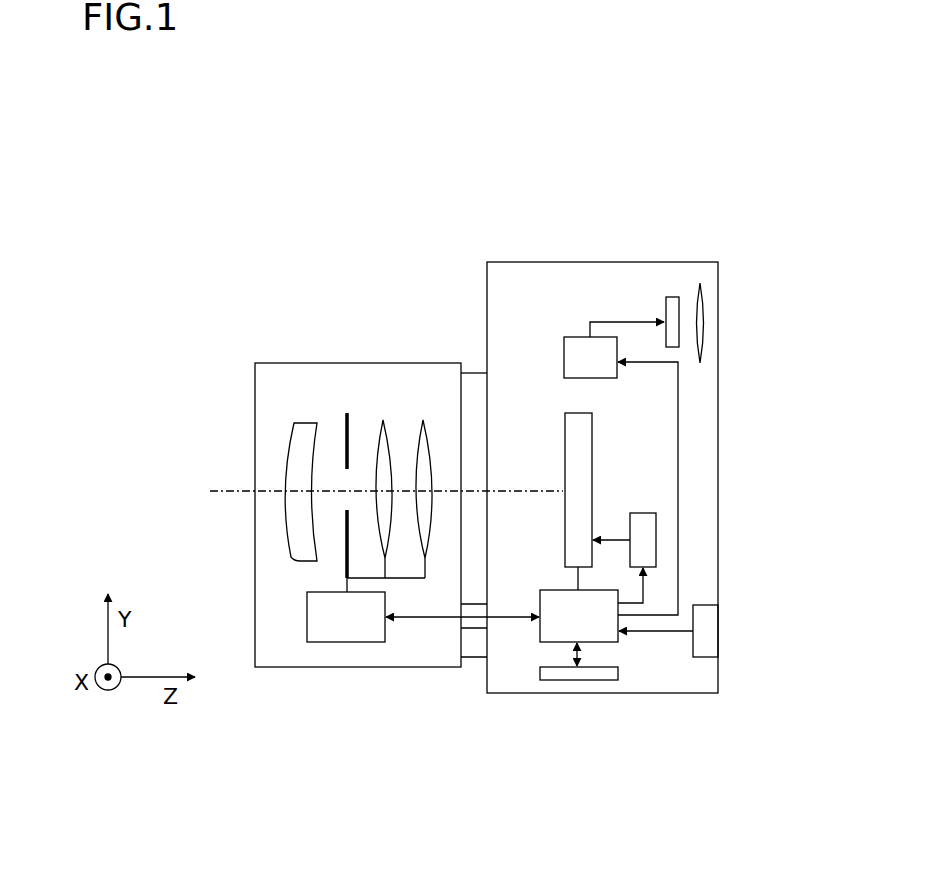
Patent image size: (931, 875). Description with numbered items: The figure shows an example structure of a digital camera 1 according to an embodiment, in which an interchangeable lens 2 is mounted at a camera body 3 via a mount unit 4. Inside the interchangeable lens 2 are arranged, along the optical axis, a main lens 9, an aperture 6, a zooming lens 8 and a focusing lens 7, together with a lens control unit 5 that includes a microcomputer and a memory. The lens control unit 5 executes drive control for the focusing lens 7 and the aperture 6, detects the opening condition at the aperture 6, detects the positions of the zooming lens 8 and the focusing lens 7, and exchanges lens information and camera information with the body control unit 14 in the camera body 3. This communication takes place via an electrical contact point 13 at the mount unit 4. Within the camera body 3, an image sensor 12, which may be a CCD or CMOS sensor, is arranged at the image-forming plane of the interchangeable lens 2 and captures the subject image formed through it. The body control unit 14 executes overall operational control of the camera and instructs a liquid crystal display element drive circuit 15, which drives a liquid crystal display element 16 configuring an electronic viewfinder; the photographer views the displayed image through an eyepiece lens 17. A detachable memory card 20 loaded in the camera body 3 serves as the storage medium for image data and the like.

The digital camera 1 is at (470, 178).
The interchangeable lens 2 is at (281, 699).
The camera body 3 is at (683, 710).
The mount unit 4 is at (473, 385).
The lens control unit 5 is at (355, 637).
The aperture 6 is at (347, 413).
The focusing lens 7 is at (423, 420).
The zooming lens 8 is at (383, 420).
The main lens 9 is at (311, 421).
The image sensor 12 is at (578, 464).
The electrical contact point 13 is at (470, 645).
The body control unit 14 is at (602, 627).
The liquid crystal display element drive circuit 15 is at (574, 345).
The liquid crystal display element 16 is at (673, 302).
The eyepiece lens 17 is at (700, 290).
The memory card 20 is at (555, 678).